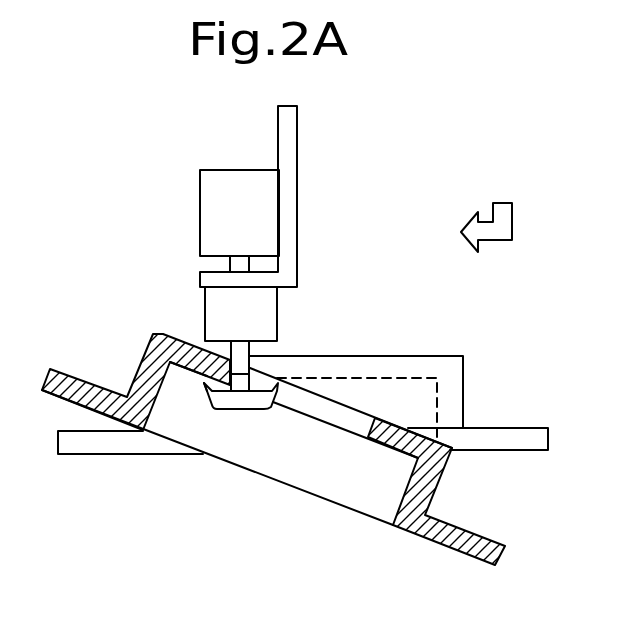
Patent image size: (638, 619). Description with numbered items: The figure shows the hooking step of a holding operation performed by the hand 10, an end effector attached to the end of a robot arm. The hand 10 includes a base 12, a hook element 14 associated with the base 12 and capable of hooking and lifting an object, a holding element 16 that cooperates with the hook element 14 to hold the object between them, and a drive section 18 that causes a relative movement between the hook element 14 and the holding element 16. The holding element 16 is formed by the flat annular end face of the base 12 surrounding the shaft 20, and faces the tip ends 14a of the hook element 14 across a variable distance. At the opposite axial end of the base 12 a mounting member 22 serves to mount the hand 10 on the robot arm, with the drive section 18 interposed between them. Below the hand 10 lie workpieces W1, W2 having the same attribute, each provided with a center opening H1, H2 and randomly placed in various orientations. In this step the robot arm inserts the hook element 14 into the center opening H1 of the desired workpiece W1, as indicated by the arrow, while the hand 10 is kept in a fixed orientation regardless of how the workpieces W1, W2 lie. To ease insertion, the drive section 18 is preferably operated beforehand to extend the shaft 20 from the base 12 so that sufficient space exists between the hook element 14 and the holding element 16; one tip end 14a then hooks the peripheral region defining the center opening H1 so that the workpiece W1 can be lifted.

The hand 10 is at (322, 205).
The base 12 is at (270, 307).
The hook element 14 is at (240, 402).
The tip end 14a is at (207, 385).
The holding element 16 is at (215, 350).
The drive section 18 is at (217, 212).
The shaft 20 is at (243, 350).
The mounting member 22 is at (290, 140).
The center opening H1 is at (366, 430).
The center opening H2 is at (378, 378).
The workpiece W1 is at (438, 492).
The workpiece W2 is at (465, 376).